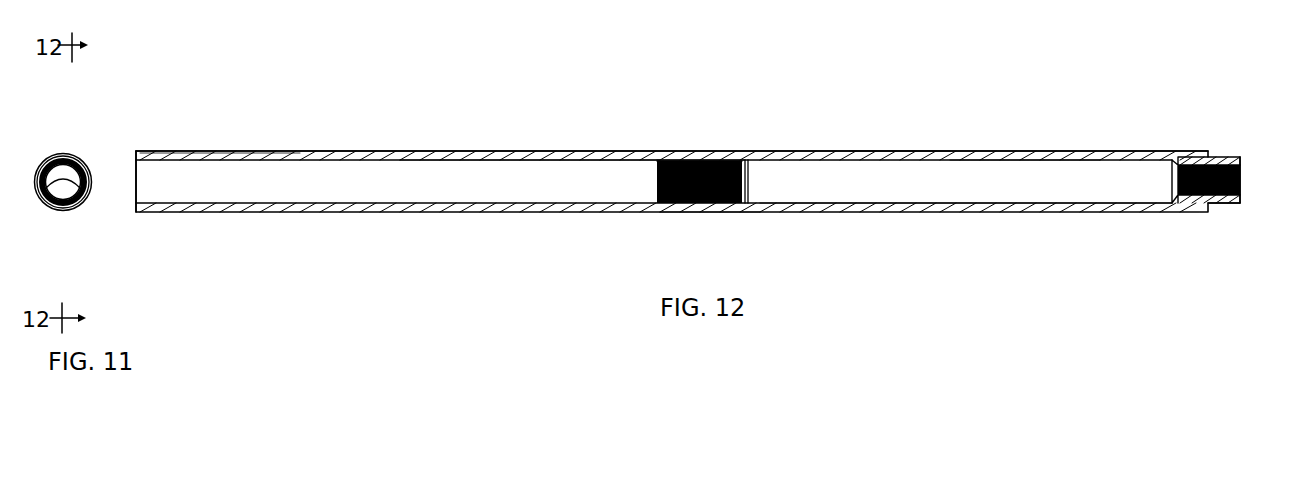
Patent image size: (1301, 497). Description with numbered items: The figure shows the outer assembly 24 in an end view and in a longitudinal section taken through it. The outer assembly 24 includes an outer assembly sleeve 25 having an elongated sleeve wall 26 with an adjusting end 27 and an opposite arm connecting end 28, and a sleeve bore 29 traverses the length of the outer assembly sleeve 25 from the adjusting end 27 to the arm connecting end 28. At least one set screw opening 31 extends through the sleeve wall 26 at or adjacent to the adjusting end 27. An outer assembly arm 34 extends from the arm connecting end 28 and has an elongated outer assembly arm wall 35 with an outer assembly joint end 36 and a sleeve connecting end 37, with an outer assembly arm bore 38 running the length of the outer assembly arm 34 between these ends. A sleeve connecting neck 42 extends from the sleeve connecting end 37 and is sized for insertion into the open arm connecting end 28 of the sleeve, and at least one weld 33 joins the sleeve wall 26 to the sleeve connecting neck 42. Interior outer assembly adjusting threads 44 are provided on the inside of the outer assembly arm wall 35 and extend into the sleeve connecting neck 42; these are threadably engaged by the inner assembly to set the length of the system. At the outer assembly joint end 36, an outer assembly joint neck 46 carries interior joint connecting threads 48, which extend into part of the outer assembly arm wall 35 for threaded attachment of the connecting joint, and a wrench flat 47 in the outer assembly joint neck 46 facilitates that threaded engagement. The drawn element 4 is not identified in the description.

In FIG. 12, the distal end of shaft 4 is at (1240, 200).
In FIG. 12, the outer assembly 24 is at (643, 108).
In FIG. 12, the outer assembly sleeve 25 is at (424, 145).
In FIG. 12, the sleeve wall 26 is at (302, 158).
In FIG. 12, the adjusting end 27 is at (136, 173).
In FIG. 12, the arm connecting end 28 is at (708, 158).
In FIG. 12, the sleeve bore 29 is at (521, 168).
In FIG. 12, the set screw opening 31 is at (163, 149).
In FIG. 12, the weld 33 is at (660, 158).
In FIG. 11, the outer assembly arm 34 is at (96, 189).
In FIG. 12, the outer assembly arm 34 is at (897, 143).
In FIG. 12, the outer assembly arm wall 35 is at (1007, 158).
In FIG. 12, the outer assembly joint end 36 is at (1210, 205).
In FIG. 12, the sleeve connecting end 37 is at (702, 212).
In FIG. 11, the outer assembly arm bore 38 is at (46, 206).
In FIG. 12, the outer assembly arm bore 38 is at (945, 205).
In FIG. 12, the sleeve connecting neck 42 is at (678, 160).
In FIG. 12, the outer assembly adjusting threads 44 is at (657, 183).
In FIG. 11, the outer assembly joint neck 46 is at (41, 158).
In FIG. 11, the wrench flat 47 is at (65, 154).
In FIG. 12, the wrench flat 47 is at (1220, 156).
In FIG. 12, the joint connecting threads 48 is at (1178, 182).